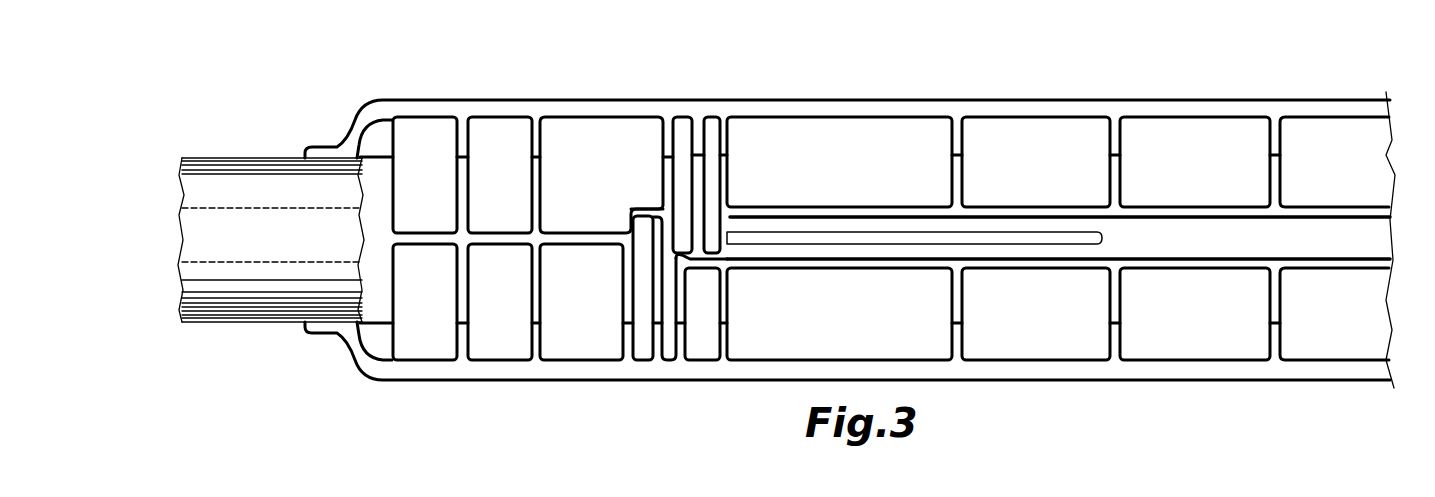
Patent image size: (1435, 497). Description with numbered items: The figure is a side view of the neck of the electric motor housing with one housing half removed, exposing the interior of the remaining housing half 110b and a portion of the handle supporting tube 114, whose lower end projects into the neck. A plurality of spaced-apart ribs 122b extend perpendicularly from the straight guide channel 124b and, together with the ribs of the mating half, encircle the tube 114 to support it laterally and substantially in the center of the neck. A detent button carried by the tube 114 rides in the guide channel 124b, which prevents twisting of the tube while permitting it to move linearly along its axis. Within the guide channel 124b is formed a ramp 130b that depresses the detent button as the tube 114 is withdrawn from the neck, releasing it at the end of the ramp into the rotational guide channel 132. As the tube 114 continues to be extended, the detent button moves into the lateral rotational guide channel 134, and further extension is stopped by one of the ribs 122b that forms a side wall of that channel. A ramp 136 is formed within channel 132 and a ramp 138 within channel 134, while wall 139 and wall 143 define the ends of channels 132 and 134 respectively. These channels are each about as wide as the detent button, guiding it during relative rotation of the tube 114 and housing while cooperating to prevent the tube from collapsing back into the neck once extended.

The housing half 110b is at (493, 381).
The tube 114 is at (247, 158).
The ribs 122b is at (542, 200).
The guide channel 124b is at (1190, 233).
The ramp 130b is at (853, 235).
The rotational guide channel 132 is at (707, 203).
The rotational guide channel 134 is at (668, 298).
The ramp 136 is at (692, 137).
The ramp 138 is at (653, 277).
The wall 139 is at (695, 263).
The wall 143 is at (642, 207).